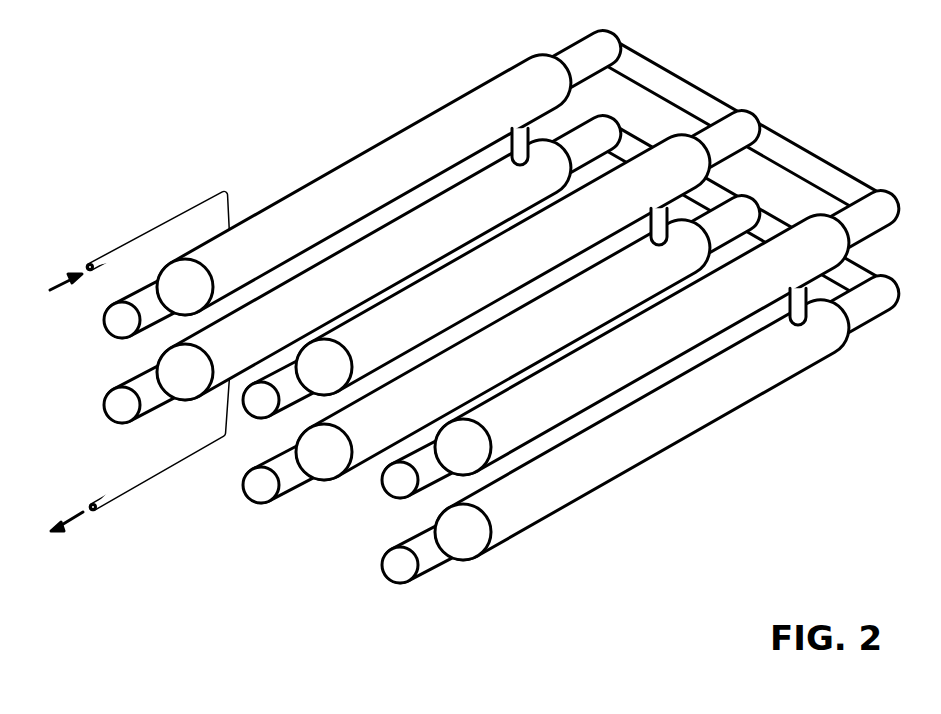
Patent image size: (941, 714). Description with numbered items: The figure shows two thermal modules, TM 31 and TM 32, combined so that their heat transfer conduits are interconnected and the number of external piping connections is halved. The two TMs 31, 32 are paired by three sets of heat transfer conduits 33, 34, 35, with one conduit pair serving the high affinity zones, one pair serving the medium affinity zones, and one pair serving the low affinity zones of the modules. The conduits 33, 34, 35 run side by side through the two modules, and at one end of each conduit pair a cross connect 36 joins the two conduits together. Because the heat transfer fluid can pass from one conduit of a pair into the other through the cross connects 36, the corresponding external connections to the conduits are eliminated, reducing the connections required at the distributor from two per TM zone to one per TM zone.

The TM 31 is at (742, 128).
The TM 32 is at (759, 213).
The heat transfer conduits 33 is at (335, 281).
The heat transfer conduits 34 is at (501, 315).
The heat transfer conduits 35 is at (640, 387).
The cross connects 36 is at (641, 226).